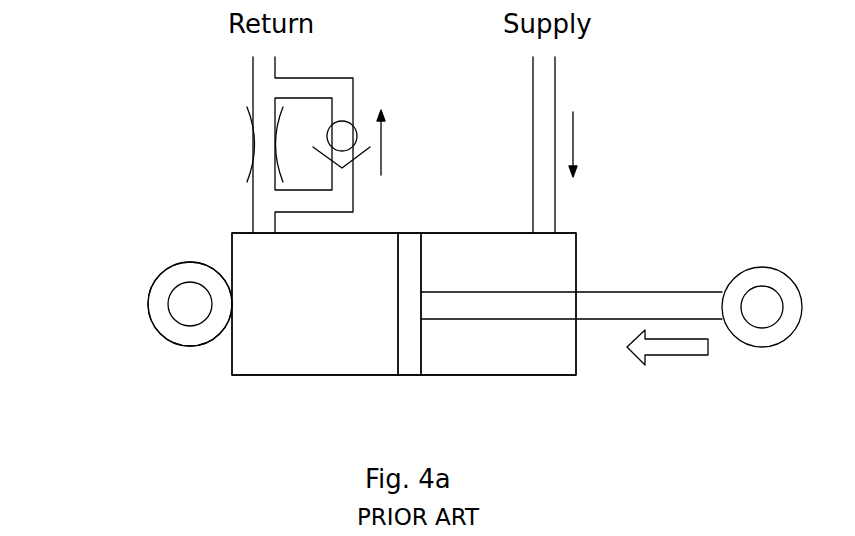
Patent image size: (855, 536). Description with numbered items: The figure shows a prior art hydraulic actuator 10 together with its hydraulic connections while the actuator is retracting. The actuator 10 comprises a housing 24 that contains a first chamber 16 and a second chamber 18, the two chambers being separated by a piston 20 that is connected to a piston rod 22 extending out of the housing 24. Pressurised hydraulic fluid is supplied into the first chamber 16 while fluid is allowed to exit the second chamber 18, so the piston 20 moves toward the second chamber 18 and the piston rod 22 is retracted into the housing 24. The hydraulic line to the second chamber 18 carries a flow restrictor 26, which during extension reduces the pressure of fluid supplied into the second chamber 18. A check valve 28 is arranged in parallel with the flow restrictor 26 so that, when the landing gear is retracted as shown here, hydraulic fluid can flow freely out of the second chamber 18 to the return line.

The actuator 10 is at (165, 251).
The first chamber 16 is at (508, 275).
The second chamber 18 is at (325, 318).
The piston 20 is at (407, 247).
The piston rod 22 is at (622, 290).
The housing 24 is at (280, 375).
The flow restrictor 26 is at (253, 145).
The check valve 28 is at (352, 122).